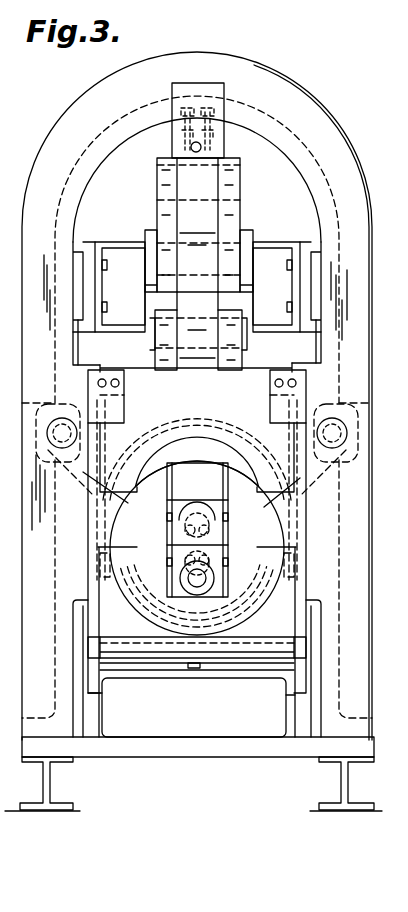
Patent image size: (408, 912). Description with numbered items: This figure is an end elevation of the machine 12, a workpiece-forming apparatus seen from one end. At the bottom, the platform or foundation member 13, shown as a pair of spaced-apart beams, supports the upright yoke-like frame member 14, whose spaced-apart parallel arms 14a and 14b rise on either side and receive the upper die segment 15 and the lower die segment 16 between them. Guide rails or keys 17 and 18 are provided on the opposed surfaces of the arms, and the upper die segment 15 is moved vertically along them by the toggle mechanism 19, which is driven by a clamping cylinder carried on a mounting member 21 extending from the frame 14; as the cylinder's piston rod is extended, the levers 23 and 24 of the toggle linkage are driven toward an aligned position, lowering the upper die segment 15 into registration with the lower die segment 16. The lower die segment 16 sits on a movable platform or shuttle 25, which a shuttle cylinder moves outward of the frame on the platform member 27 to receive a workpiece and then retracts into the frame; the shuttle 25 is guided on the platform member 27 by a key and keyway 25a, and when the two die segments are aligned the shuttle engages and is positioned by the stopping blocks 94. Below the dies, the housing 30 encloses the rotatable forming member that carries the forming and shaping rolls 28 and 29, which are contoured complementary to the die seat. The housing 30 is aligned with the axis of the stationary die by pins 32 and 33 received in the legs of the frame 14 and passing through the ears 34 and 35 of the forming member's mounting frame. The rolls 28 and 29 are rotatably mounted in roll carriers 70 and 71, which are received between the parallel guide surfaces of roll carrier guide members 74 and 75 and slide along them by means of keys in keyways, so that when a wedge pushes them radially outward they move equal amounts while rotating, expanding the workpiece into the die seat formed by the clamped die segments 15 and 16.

The machine 12 is at (332, 96).
The platform or foundation member 13 is at (106, 748).
The yoke-like frame member 14 is at (60, 121).
The frame arm 14a is at (23, 595).
The frame arm 14b is at (326, 347).
The upper die segment 15 is at (232, 432).
The lower die segment 16 is at (272, 582).
The guide rail or key 17 is at (88, 523).
The guide rail or key 18 is at (293, 523).
The toggle mechanism 19 is at (252, 210).
The mounting member 21 is at (115, 243).
The lever of toggle linkage 23 is at (165, 181).
The lever of toggle linkage 24 is at (205, 303).
The movable platform or shuttle 25 is at (144, 657).
The key and keyway 25a is at (197, 670).
The platform member 27 is at (287, 683).
The forming and shaping roll 28 is at (200, 510).
The forming and shaping roll 29 is at (220, 585).
The housing 30 is at (198, 437).
The pin 32 is at (63, 420).
The pin 33 is at (331, 420).
The ear 34 is at (42, 412).
The ear 35 is at (350, 412).
The roll carrier 70 is at (169, 506).
The roll carrier 71 is at (172, 560).
The roll carrier guide member 74 is at (294, 482).
The roll carrier guide member 75 is at (148, 536).
The stopping block 94 is at (100, 563).